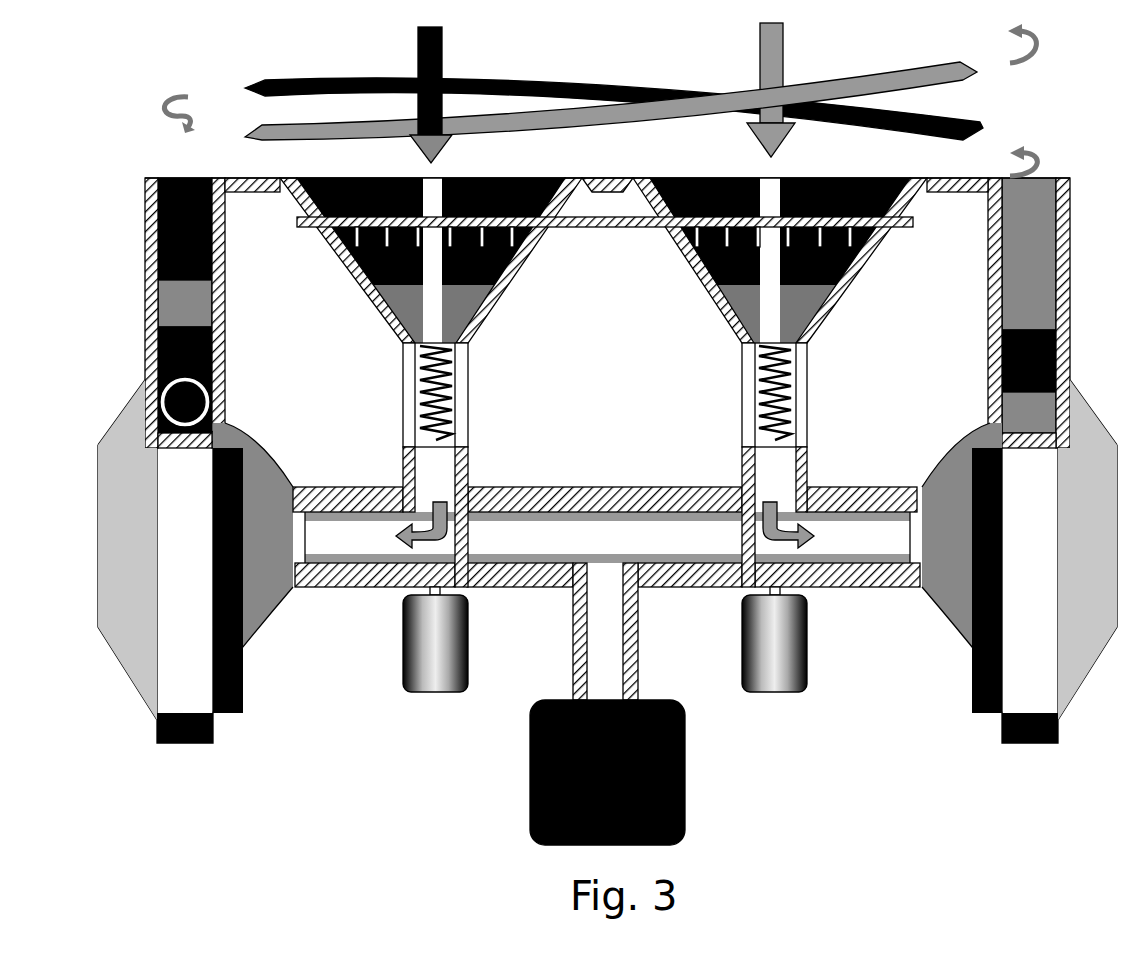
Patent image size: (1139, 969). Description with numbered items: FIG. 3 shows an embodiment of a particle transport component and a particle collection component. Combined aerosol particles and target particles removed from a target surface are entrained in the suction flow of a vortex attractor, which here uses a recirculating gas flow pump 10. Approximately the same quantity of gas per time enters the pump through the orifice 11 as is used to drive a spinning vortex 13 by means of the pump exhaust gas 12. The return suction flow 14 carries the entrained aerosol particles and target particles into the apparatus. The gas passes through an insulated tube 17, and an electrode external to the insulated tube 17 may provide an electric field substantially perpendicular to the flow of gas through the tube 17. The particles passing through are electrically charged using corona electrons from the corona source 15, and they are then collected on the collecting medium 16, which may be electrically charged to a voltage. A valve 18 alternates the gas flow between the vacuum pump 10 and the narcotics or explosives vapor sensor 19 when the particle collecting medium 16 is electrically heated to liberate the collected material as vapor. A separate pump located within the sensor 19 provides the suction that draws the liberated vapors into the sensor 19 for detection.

The recirculating gas flow pump 10 is at (120, 410).
The orifice 11 is at (902, 523).
The pump exhaust gas 12 is at (205, 385).
The spinning vortex 13 is at (188, 95).
The return suction flow 14 is at (418, 65).
The corona source 15 is at (520, 253).
The collecting medium 16 is at (443, 380).
The insulated tube 17 is at (740, 377).
The valve 18 is at (462, 527).
The narcotics or explosives vapor sensor 19 is at (528, 740).